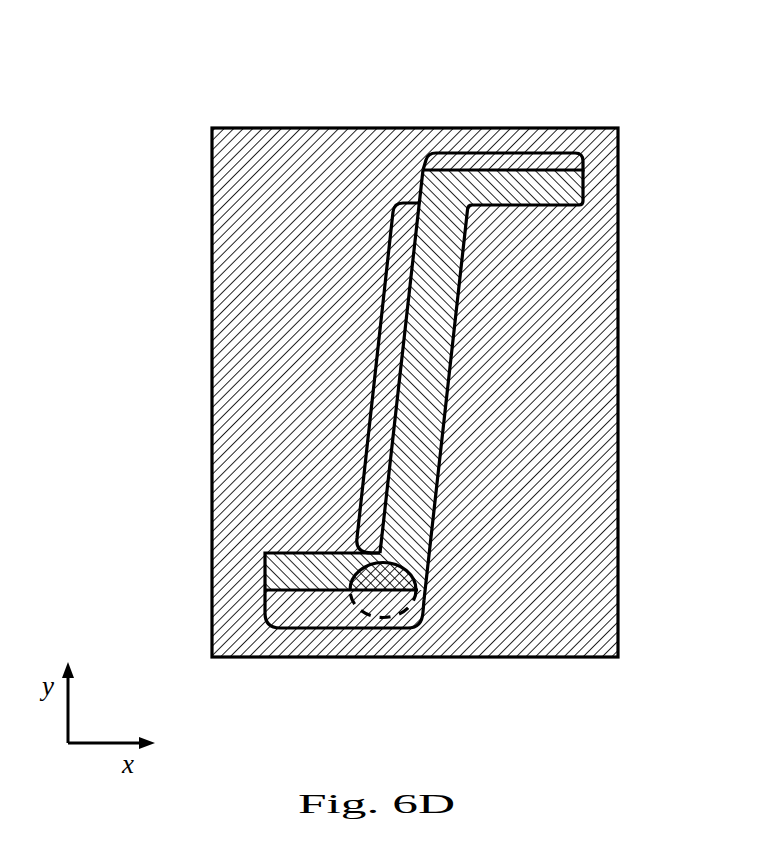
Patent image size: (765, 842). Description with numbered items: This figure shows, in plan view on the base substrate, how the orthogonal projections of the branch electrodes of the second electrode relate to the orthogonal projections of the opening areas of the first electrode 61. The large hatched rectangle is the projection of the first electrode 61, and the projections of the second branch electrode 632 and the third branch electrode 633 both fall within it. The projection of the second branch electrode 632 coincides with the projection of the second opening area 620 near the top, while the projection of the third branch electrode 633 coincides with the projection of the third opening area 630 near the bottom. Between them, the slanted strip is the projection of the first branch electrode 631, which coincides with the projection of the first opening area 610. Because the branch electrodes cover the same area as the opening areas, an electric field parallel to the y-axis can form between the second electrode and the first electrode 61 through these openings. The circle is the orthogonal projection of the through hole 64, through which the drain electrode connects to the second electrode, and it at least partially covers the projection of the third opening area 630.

The first electrode 61 is at (618, 633).
The second opening area 620 is at (448, 97).
The second branch electrode 632 is at (503, 152).
The first opening area 610 is at (257, 378).
The first branch electrode 631 is at (372, 378).
The third opening area 630 is at (264, 628).
The third branch electrode 633 is at (355, 628).
The orthogonal projection of the through hole 64 is at (360, 572).